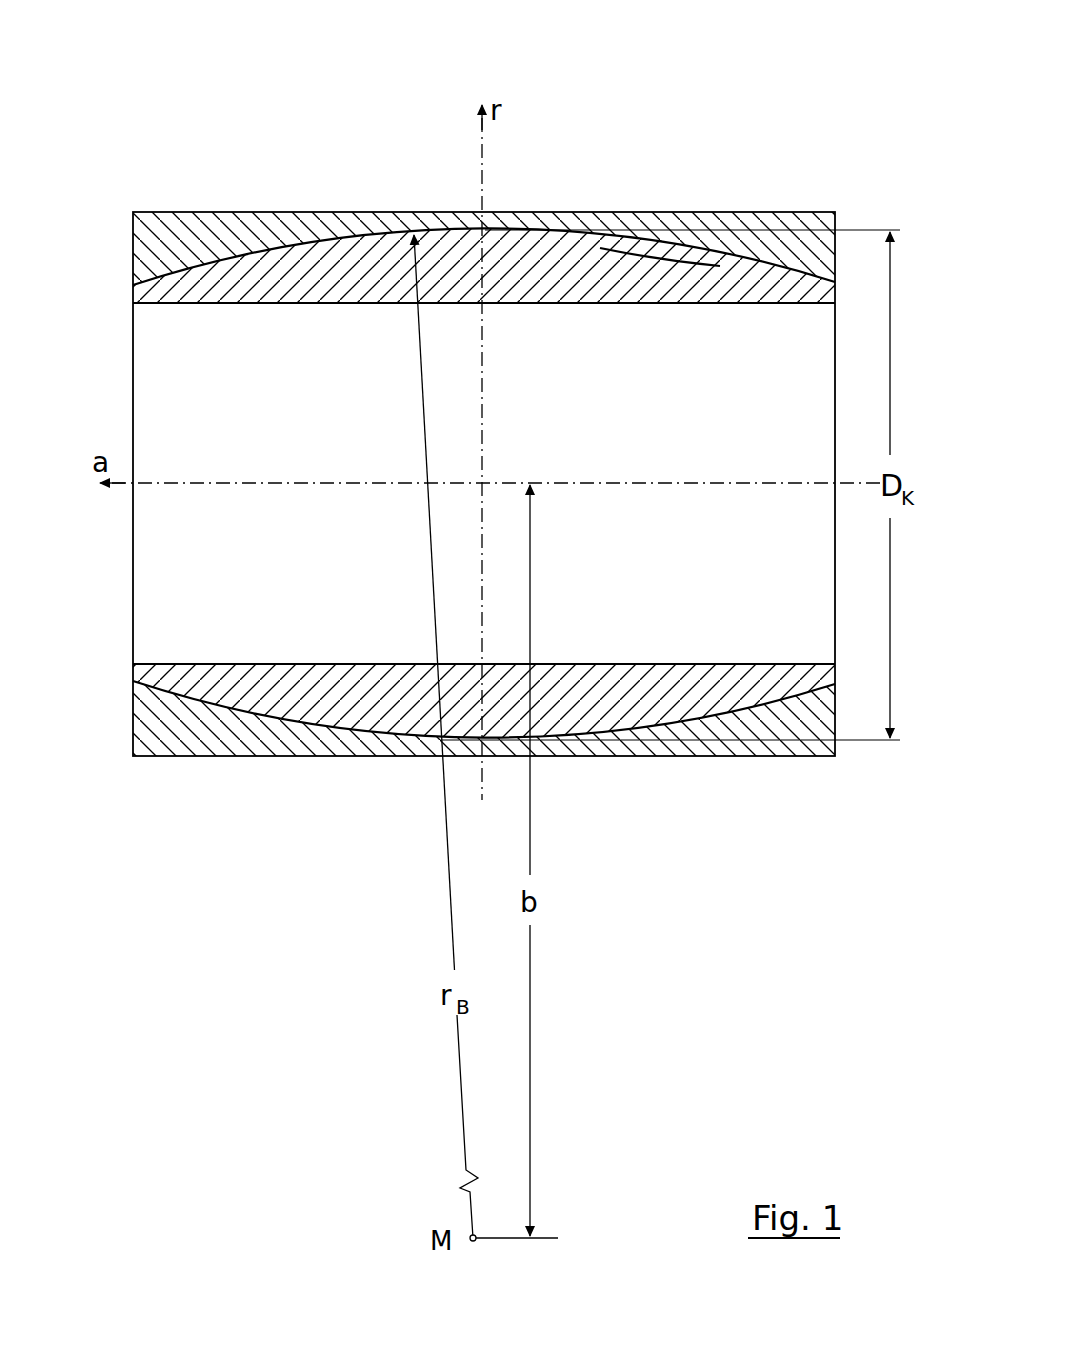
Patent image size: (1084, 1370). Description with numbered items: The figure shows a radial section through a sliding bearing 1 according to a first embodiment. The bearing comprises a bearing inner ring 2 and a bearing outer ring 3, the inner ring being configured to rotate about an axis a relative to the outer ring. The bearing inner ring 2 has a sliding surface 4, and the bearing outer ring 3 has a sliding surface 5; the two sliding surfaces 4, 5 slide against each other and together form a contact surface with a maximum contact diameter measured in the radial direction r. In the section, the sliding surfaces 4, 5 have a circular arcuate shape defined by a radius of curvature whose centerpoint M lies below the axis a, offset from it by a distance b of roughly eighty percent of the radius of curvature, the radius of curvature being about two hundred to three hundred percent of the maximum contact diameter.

The spherical plain bearing 1 is at (606, 150).
The bearing inner ring 2 is at (240, 282).
The bearing outer ring 3 is at (284, 222).
The sliding surface 4 is at (735, 256).
The sliding surface 5 is at (685, 250).